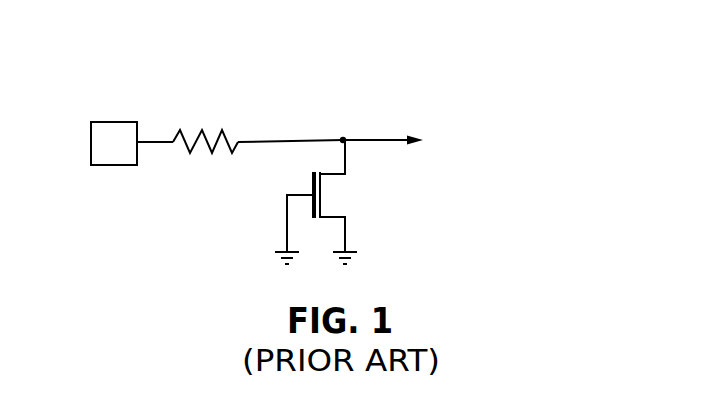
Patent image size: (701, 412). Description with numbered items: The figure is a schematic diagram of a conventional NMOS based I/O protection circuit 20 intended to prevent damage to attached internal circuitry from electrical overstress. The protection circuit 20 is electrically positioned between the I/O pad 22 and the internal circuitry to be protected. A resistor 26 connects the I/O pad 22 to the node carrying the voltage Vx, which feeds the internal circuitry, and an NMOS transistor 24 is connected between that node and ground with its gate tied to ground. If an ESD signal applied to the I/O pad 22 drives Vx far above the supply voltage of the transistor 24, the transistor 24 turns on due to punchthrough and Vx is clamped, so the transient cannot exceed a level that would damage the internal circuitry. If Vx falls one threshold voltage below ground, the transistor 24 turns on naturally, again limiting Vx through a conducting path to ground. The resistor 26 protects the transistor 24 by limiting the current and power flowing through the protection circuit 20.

The NMOS based I/O protection circuit 20 is at (196, 55).
The I/O pad 22 is at (114, 143).
The NMOS transistor T1 24 is at (312, 180).
The resistor 26 is at (212, 153).